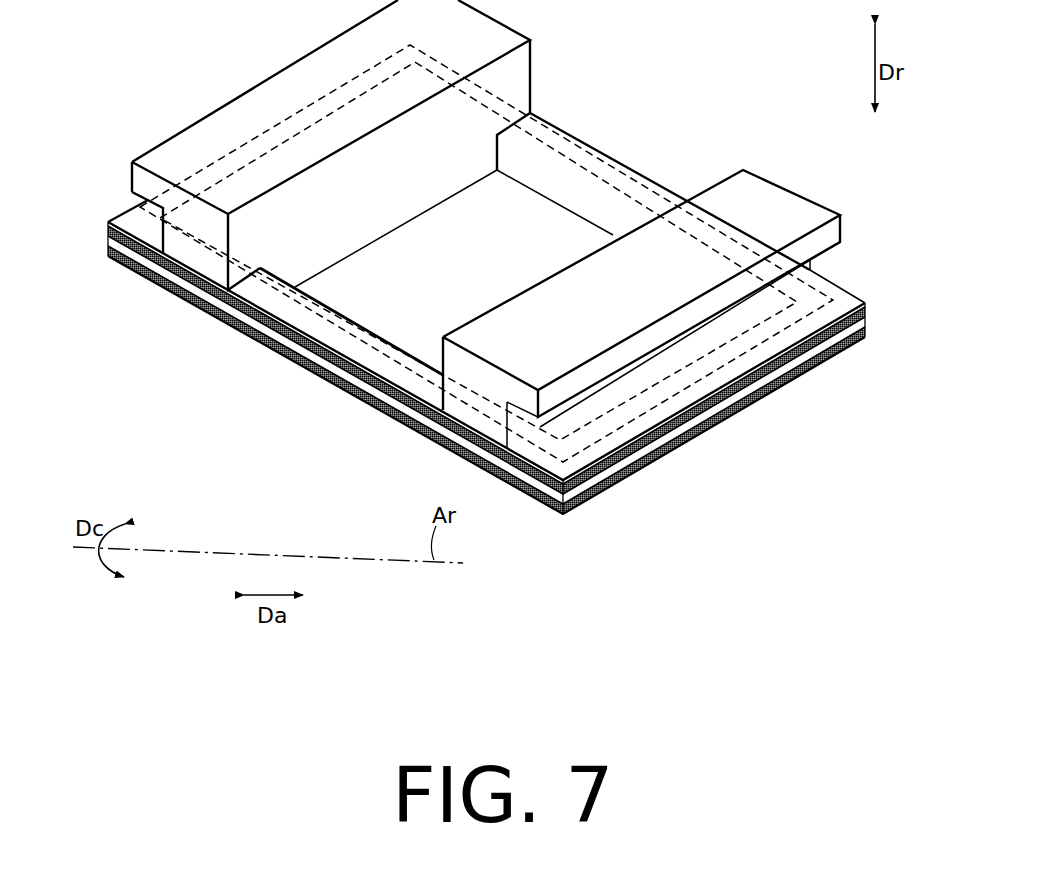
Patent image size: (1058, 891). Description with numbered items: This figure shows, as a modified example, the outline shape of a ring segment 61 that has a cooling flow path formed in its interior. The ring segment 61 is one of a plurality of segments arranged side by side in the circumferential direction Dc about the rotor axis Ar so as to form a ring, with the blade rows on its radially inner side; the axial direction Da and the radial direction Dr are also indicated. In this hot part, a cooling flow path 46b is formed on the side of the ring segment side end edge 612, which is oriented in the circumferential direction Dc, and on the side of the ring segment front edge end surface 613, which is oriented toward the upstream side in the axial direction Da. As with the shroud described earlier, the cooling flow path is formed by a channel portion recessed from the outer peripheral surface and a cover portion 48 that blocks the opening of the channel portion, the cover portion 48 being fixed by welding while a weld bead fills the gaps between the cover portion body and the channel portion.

The ring segment 61 is at (612, 150).
The ring segment side end edge 612 is at (383, 420).
The ring segment front edge end surface 613 is at (660, 470).
The cooling flow path 46b is at (518, 324).
The cover portion 48 is at (866, 322).